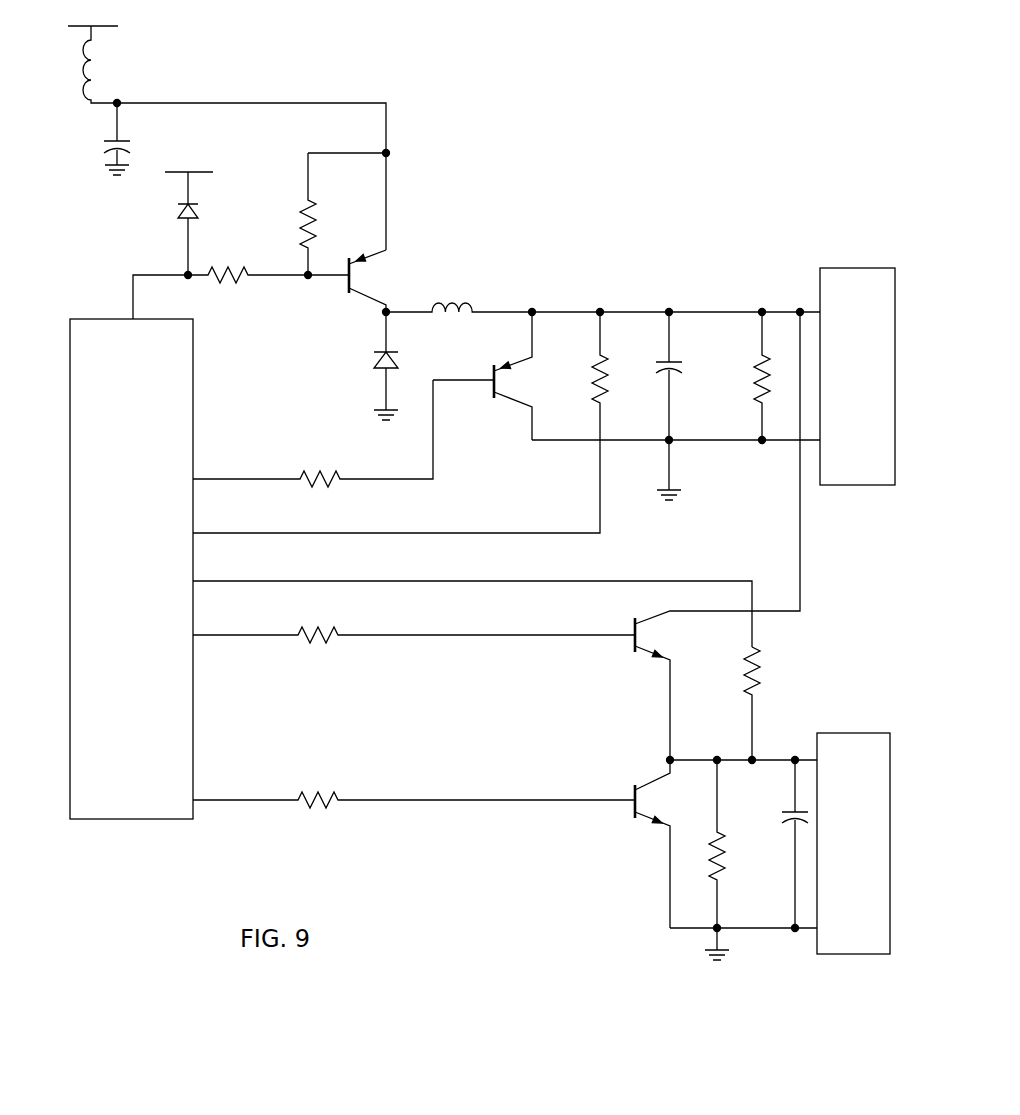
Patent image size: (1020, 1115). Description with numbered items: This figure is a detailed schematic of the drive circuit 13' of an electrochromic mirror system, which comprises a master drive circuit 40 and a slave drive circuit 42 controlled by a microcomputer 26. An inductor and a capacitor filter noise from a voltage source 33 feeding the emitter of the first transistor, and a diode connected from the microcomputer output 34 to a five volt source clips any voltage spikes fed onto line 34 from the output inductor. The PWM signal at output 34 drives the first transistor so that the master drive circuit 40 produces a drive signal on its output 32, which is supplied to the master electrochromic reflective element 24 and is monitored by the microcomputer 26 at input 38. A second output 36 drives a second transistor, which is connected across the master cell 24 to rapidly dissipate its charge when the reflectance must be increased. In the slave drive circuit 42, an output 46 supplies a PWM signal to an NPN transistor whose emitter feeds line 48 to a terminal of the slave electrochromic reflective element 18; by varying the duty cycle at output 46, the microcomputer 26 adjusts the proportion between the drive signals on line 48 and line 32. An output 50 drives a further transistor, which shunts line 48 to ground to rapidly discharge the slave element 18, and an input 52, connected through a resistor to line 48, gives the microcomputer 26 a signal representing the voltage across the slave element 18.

The voltage source 33 is at (117, 25).
The drive circuit 13' is at (297, 225).
The output of microcomputer 34 is at (133, 297).
The microcomputer 26 is at (195, 333).
The output of master drive circuit 32 is at (500, 307).
The master drive circuit 40 is at (460, 360).
The master electrochromic reflective element 24 is at (840, 263).
The second output of microcomputer 36 is at (205, 478).
The input of microcomputer 38 is at (205, 532).
The input of microcomputer 52 is at (205, 580).
The output of microcomputer 46 is at (205, 634).
The output of microcomputer 50 is at (205, 799).
The slave drive circuit 42 is at (546, 730).
The line 48 is at (773, 756).
The slave electrochromic reflective element 18 is at (852, 729).